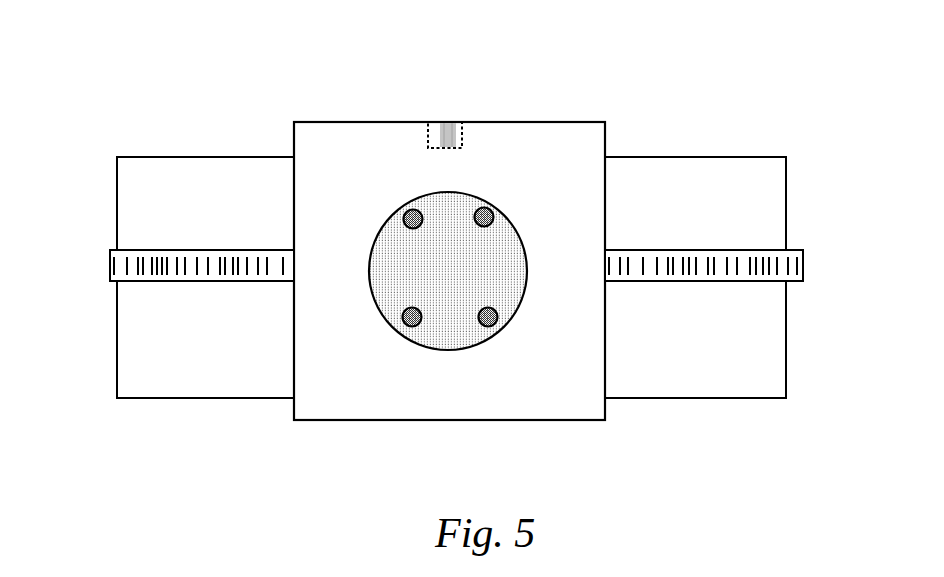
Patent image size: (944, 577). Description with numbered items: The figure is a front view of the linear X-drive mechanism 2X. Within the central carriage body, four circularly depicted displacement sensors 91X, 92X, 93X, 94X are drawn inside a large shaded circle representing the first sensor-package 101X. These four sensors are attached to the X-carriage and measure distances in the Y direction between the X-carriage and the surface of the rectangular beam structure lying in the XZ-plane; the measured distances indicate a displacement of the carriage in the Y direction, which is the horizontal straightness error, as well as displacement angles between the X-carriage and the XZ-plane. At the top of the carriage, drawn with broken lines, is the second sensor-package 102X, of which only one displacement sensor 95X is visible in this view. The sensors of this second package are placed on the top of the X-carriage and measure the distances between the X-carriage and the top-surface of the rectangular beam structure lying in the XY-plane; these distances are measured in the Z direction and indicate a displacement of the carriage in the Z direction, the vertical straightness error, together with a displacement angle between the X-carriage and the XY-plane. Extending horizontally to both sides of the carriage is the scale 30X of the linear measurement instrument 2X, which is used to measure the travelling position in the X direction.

The linear X-drive mechanism 2X is at (622, 63).
The scale 30X is at (177, 258).
The displacement sensor 91X is at (405, 214).
The displacement sensor 92X is at (412, 320).
The displacement sensor 93X is at (492, 212).
The displacement sensor 94X is at (492, 321).
The displacement sensor 95X is at (450, 137).
The first sensor-package 101X is at (455, 327).
The second sensor-package 102X is at (448, 140).